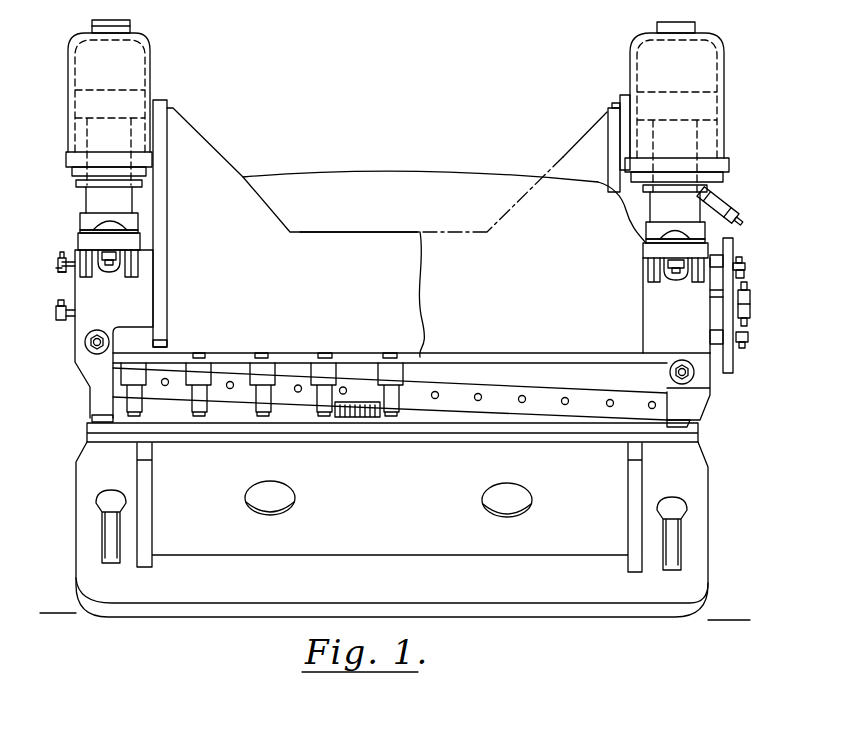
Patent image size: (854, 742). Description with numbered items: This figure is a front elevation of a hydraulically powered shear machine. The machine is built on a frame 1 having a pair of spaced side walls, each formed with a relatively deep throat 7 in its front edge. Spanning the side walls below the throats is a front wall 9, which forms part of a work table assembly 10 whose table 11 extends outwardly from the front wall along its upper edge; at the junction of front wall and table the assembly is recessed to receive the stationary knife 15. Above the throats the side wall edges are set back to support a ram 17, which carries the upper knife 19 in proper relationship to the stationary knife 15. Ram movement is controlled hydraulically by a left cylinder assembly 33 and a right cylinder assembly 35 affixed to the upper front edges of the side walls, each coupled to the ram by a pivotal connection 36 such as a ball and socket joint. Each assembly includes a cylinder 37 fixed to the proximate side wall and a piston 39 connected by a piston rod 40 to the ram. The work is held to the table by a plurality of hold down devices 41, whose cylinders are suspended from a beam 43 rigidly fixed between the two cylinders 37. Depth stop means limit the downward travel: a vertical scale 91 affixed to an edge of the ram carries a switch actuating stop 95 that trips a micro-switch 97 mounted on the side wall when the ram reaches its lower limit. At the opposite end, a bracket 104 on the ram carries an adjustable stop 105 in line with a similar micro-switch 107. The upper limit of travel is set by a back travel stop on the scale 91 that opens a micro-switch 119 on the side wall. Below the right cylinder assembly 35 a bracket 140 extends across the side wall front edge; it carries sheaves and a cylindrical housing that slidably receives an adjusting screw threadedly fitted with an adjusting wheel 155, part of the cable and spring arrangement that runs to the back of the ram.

The frame 1 is at (50, 388).
The throat 7 is at (95, 411).
The front wall 9 is at (88, 470).
The work table assembly 10 is at (390, 584).
The table 11 is at (560, 440).
The stationary knife 15 is at (309, 419).
The ram 17 is at (356, 178).
The upper knife 19 is at (465, 396).
The left cylinder assembly 33 is at (100, 61).
The right cylinder assembly 35 is at (663, 52).
The pivotal connection 36 is at (115, 228).
The cylinder 37 is at (82, 70).
The piston 39 is at (138, 100).
The piston rod 40 is at (90, 191).
The hold down devices 41 is at (140, 398).
The beam 43 is at (332, 240).
The vertical scale 91 is at (726, 292).
The switch actuating stop 95 is at (748, 279).
The micro-switch 97 is at (750, 305).
The bracket 104 is at (70, 258).
The adjustable stop 105 is at (58, 269).
The micro-switch 107 is at (56, 313).
The micro-switch 119 is at (750, 313).
The bracket 140 is at (700, 205).
The adjusting wheel 155 is at (740, 205).